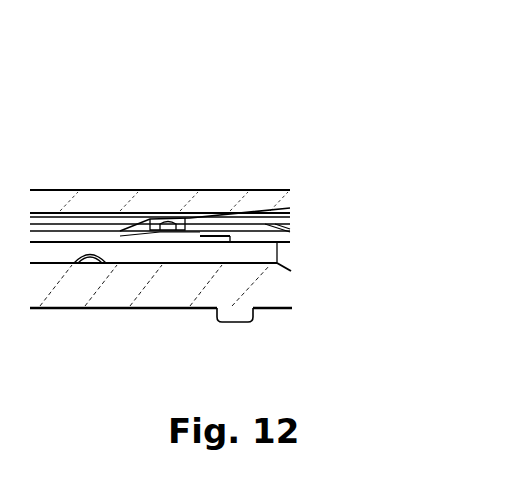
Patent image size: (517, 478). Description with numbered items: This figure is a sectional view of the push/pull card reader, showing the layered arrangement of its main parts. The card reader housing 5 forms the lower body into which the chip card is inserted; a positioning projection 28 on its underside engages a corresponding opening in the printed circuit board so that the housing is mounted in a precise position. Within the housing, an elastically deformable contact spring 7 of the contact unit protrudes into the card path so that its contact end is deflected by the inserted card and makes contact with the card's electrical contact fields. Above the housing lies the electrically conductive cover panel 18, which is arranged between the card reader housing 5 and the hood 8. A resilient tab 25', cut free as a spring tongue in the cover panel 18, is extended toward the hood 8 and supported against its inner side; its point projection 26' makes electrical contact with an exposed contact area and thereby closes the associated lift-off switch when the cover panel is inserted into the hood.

The hood 8 is at (62, 199).
The point projection 26' is at (205, 166).
The resilient tab 25' is at (185, 163).
The cover panel 18 is at (243, 228).
The contact spring 7 is at (88, 257).
The card reader housing 5 is at (100, 286).
The positioning projection 28 is at (232, 319).